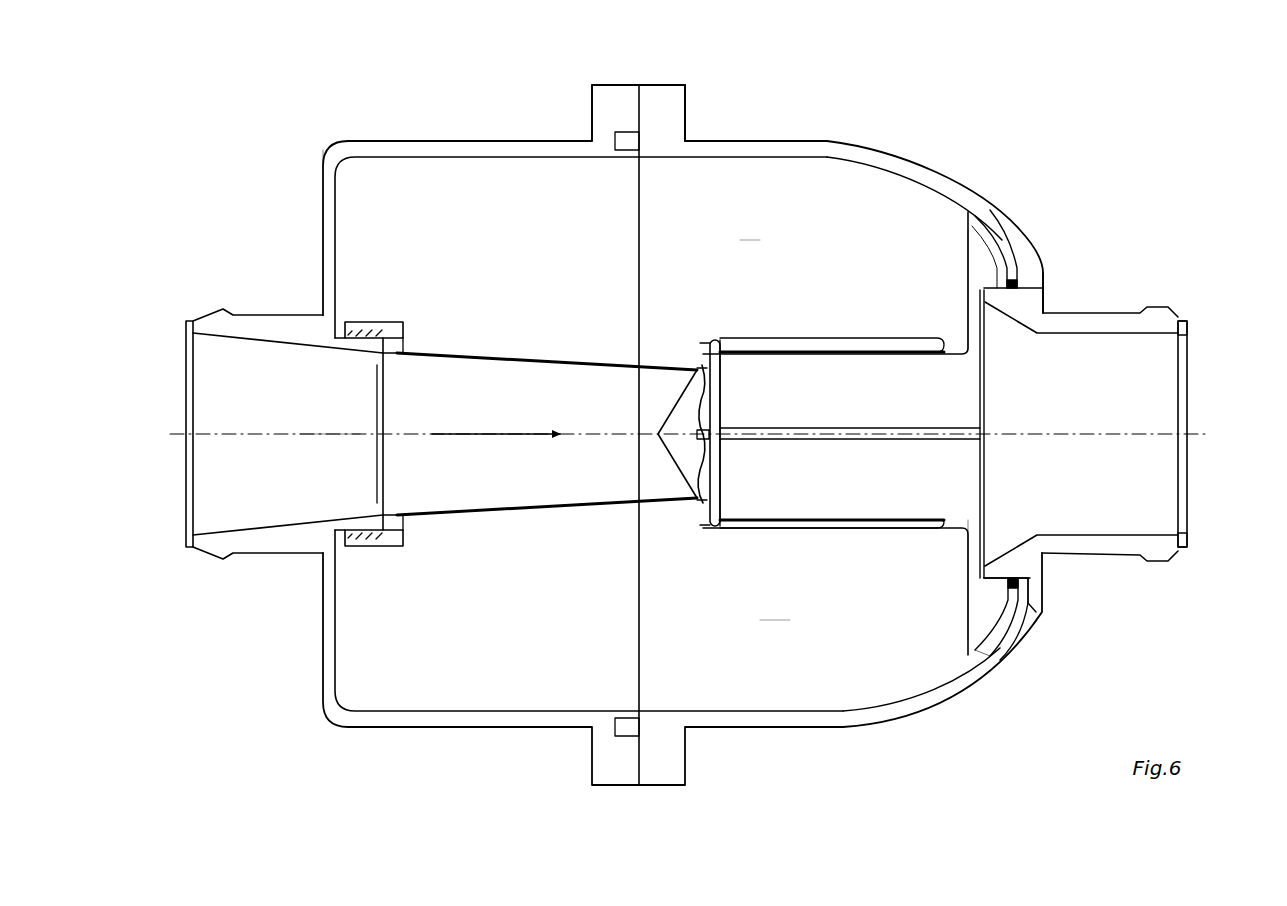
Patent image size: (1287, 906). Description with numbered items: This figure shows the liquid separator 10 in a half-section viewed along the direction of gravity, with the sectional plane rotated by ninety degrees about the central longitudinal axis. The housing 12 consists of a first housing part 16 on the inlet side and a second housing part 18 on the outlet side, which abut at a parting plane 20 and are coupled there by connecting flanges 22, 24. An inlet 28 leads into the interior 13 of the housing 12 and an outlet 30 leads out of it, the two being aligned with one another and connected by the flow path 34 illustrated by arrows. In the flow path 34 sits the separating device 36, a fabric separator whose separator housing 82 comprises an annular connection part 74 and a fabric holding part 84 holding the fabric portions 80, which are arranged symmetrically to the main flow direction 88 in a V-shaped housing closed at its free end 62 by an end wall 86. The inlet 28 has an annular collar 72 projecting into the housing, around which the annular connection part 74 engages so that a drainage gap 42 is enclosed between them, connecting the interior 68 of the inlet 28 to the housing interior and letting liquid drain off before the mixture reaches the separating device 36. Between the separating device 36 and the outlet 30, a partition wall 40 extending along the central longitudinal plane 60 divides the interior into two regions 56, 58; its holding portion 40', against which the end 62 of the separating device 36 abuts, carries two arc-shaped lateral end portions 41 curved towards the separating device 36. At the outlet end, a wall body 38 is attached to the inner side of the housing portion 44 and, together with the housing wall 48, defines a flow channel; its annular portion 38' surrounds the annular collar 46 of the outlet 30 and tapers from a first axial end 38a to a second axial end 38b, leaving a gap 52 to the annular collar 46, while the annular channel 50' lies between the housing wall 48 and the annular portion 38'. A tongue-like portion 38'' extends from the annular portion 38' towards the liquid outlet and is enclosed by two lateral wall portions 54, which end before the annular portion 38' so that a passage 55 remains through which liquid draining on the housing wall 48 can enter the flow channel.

The liquid separator 10 is at (297, 115).
The housing 12 is at (880, 95).
The interior 13 is at (463, 660).
The first housing part 16 is at (422, 141).
The second housing part 18 is at (945, 162).
The parting plane 20 is at (639, 85).
The connecting flange 22 is at (604, 110).
The connecting flange 24 is at (680, 108).
The inlet 28 is at (220, 415).
The outlet 30 is at (1160, 458).
The flow path 34 is at (735, 320).
The separating device 36 is at (472, 337).
The wall body 38 is at (940, 648).
The annular portion 38' is at (1039, 240).
The tongue-like portion 38'' is at (929, 564).
The first axial end 38a is at (966, 216).
The second axial end 38b is at (1020, 288).
The partition wall 40 is at (850, 416).
The holding portion 40' is at (765, 433).
The lateral end portions 41 is at (700, 343).
The drainage gap 42 is at (378, 402).
The housing portion 44 is at (985, 178).
The annular collar 46 is at (1030, 567).
The wall 48 is at (938, 683).
The annular channel 50' is at (1061, 630).
The gap 52 is at (1048, 585).
The lateral wall portions 54 is at (795, 342).
The passage 55 is at (958, 337).
The region 56 is at (800, 600).
The region 58 is at (798, 250).
The central longitudinal plane 60 is at (850, 433).
The end 62 is at (725, 538).
The interior 68 is at (234, 500).
The annular collar 72 is at (362, 528).
The annular connection part 74 is at (370, 323).
The fabric portions 80 is at (530, 362).
The separator housing 82 is at (547, 434).
The fabric holding part 84 is at (608, 376).
The end wall 86 is at (660, 433).
The main flow direction 88 is at (468, 450).